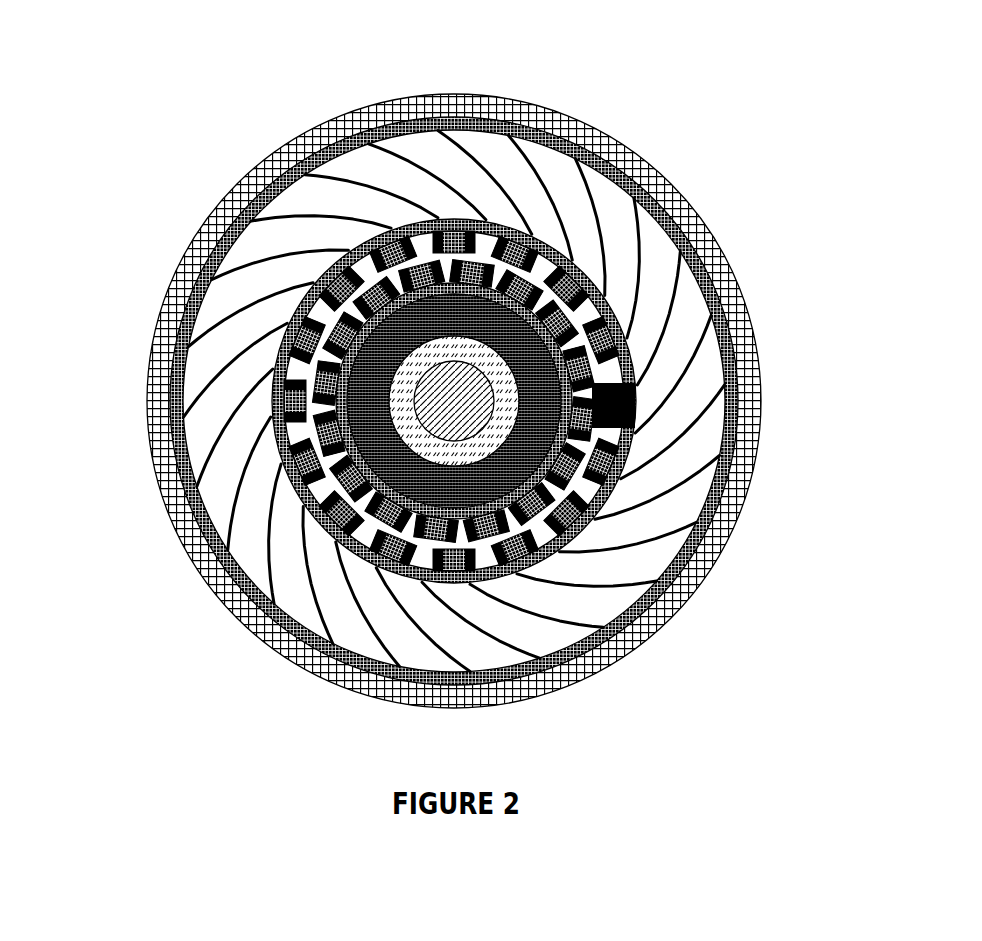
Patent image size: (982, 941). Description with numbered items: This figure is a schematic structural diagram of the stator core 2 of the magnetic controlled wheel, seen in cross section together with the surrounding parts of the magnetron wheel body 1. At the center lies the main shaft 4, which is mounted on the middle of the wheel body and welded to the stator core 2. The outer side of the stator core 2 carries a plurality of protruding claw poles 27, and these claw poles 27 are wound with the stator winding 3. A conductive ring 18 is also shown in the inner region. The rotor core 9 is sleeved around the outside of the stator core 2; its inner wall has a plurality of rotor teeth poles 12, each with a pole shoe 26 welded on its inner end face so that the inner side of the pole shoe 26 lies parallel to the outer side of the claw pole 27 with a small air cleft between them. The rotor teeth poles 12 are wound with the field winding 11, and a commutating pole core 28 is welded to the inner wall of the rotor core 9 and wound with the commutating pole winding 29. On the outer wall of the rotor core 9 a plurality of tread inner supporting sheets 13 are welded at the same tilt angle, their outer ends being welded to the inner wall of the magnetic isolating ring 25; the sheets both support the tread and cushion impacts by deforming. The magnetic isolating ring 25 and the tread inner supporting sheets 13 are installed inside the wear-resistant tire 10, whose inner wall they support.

The magnetron wheel body 1 is at (192, 237).
The wear-resistant tire 10 is at (172, 318).
The magnetic isolating ring 25 is at (182, 475).
The tread inner supporting sheet 13 is at (243, 522).
The rotor teeth pole 12 is at (360, 250).
The rotor core 9 is at (333, 542).
The field winding 11 is at (418, 232).
The pole shoe 26 is at (516, 238).
The commutating pole winding 29 is at (636, 427).
The commutating pole core 28 is at (635, 400).
The claw pole 27 is at (563, 330).
The stator core 2 is at (560, 463).
The stator winding 3 is at (560, 367).
The conductive ring 18 is at (523, 490).
The main shaft 4 is at (433, 455).